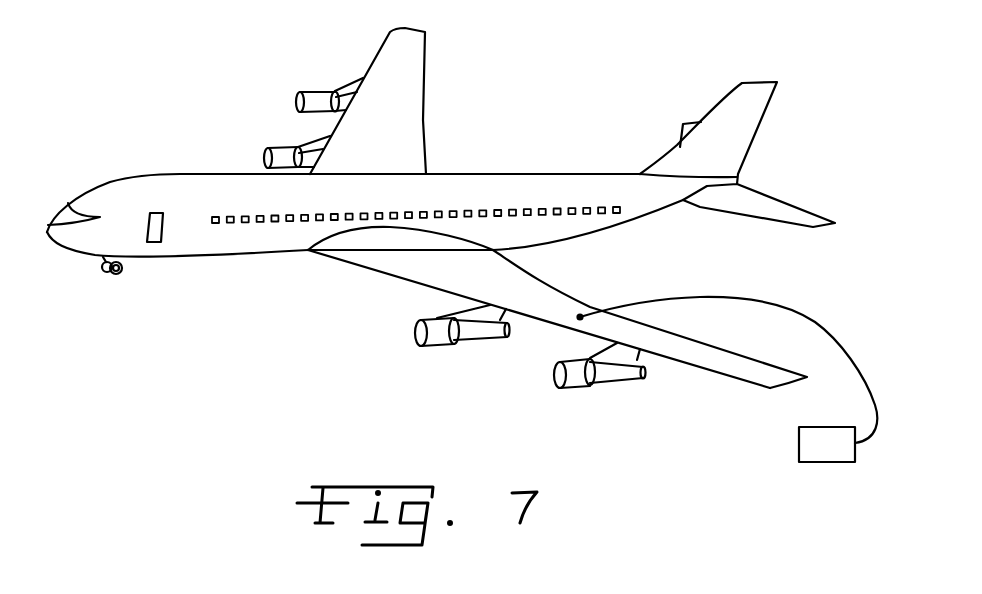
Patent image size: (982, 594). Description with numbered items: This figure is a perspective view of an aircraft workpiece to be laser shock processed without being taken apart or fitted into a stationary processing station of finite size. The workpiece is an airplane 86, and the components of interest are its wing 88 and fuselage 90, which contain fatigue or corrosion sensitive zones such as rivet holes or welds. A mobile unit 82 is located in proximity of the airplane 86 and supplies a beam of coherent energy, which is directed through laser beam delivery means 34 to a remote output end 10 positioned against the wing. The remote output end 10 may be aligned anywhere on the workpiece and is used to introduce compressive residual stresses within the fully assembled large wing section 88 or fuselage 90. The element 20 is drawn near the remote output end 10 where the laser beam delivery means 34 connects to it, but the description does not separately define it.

The airplane 86 is at (462, 256).
The fuselage 90 is at (197, 212).
The wing 88 is at (433, 270).
The remote output end 10 is at (579, 314).
The cable lead 20 is at (592, 308).
The laser beam delivery means 34 is at (728, 340).
The mobile unit 82 is at (800, 442).